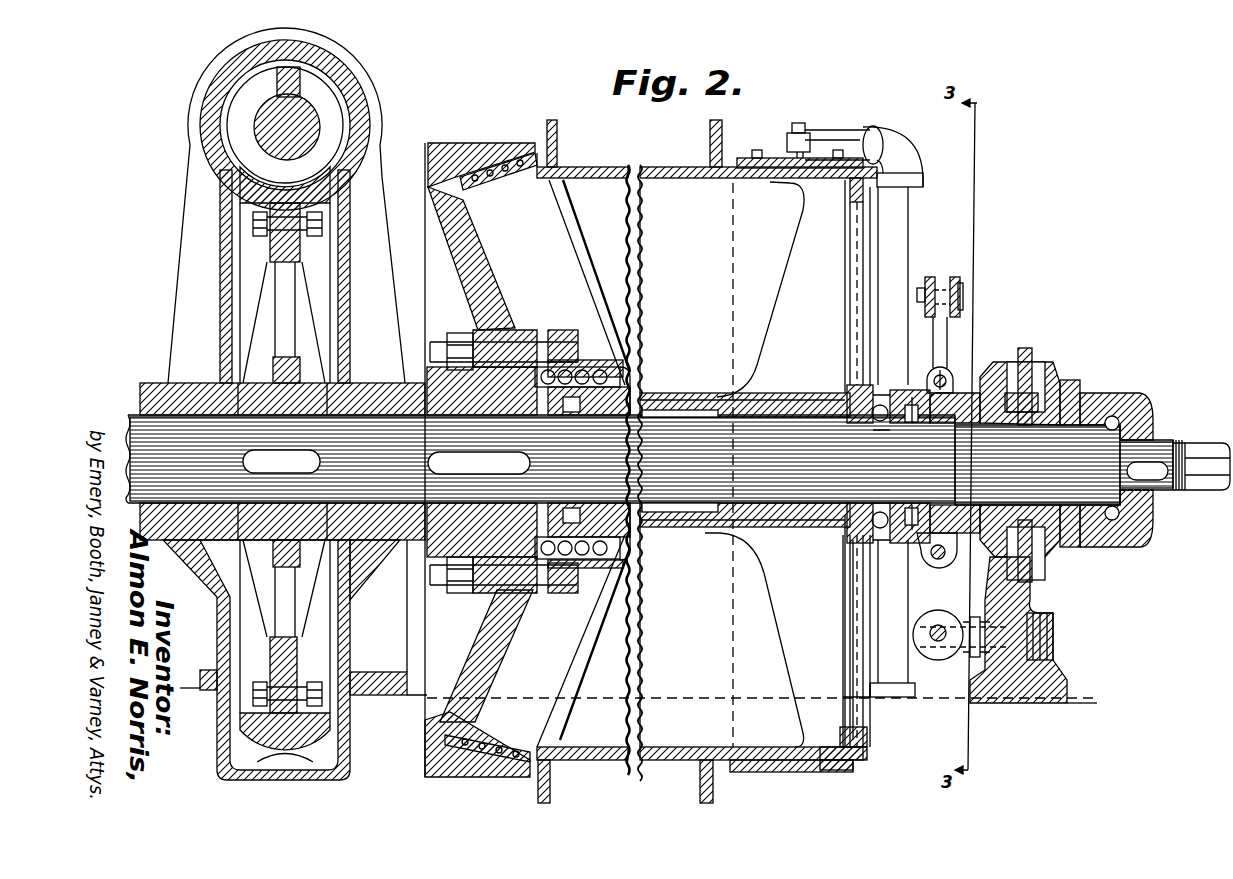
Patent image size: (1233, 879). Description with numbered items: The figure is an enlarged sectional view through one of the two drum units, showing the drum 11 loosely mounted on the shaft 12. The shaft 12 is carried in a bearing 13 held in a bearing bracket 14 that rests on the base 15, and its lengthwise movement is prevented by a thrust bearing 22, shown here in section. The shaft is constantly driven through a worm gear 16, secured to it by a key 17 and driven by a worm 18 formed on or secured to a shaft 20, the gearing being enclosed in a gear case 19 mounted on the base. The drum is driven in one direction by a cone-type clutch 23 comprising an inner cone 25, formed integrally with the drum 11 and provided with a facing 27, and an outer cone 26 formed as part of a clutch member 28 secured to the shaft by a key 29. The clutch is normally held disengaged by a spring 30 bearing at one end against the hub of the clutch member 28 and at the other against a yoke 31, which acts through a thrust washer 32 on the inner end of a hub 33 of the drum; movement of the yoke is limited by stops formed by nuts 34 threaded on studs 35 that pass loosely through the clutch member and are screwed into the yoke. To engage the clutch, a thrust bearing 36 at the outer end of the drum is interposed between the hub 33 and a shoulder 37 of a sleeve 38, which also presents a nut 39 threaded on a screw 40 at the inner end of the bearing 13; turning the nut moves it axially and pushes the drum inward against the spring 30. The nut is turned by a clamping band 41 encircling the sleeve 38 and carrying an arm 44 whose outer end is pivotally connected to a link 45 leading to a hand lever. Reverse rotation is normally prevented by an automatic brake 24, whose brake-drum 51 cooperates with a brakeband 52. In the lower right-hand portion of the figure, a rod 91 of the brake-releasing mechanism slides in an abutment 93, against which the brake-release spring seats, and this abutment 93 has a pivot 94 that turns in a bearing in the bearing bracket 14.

The drum 11 is at (683, 168).
The shaft 12 is at (695, 504).
The bearing 13 is at (1067, 394).
The bearing bracket 14 is at (1053, 374).
The base 15 is at (1083, 703).
The worm gear 16 is at (327, 188).
The key 17 is at (275, 455).
The worm 18 is at (340, 128).
The gear case 19 is at (365, 93).
The shaft 20 is at (270, 106).
The thrust bearing 22 is at (1150, 414).
The clutch 23 is at (513, 144).
The brake 24 is at (800, 128).
The inner cone 25 is at (498, 184).
The outer cone 26 is at (448, 148).
The facing 27 is at (510, 178).
The clutch member 28 is at (500, 300).
The key 29 is at (490, 449).
The spring 30 is at (587, 361).
The yoke 31 is at (637, 378).
The thrust washer 32 is at (582, 412).
The hub 33 is at (650, 404).
The nuts 34 is at (455, 345).
The studs 35 is at (517, 328).
The thrust bearing 36 is at (847, 390).
The shoulder 37 is at (905, 388).
The sleeve 38 is at (898, 392).
The nut 39 is at (968, 392).
The screw 40 is at (912, 396).
The clamping band 41 is at (945, 380).
The arm 44 is at (941, 338).
The link 45 is at (958, 278).
The brake-drum 51 is at (773, 183).
The brakeband 52 is at (770, 158).
The rod 91 is at (945, 622).
The abutment 93 is at (962, 656).
The pivot 94 is at (1053, 641).